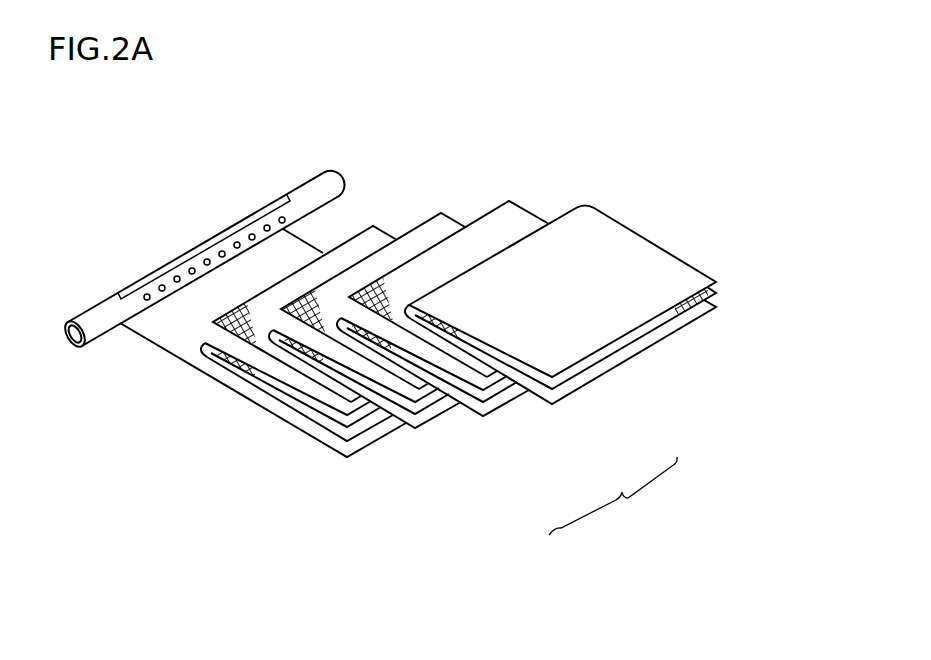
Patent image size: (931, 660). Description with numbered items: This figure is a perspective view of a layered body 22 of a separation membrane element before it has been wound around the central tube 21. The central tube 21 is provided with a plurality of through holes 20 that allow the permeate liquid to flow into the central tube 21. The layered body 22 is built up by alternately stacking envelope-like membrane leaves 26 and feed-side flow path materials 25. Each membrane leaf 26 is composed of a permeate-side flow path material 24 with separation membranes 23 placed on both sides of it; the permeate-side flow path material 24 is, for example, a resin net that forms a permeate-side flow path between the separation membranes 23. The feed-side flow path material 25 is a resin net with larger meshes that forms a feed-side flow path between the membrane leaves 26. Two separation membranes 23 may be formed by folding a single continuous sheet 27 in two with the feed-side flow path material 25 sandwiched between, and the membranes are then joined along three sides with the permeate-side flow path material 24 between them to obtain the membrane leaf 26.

The through holes 20 is at (252, 235).
The central tube 21 is at (322, 190).
The layered body 22 is at (423, 376).
The separation membranes 23 is at (620, 257).
The permeate-side flow path material 24 is at (172, 326).
The feed-side flow path material 25 is at (636, 341).
The membrane leaves 26 is at (613, 499).
The single continuous sheet 27 is at (676, 235).